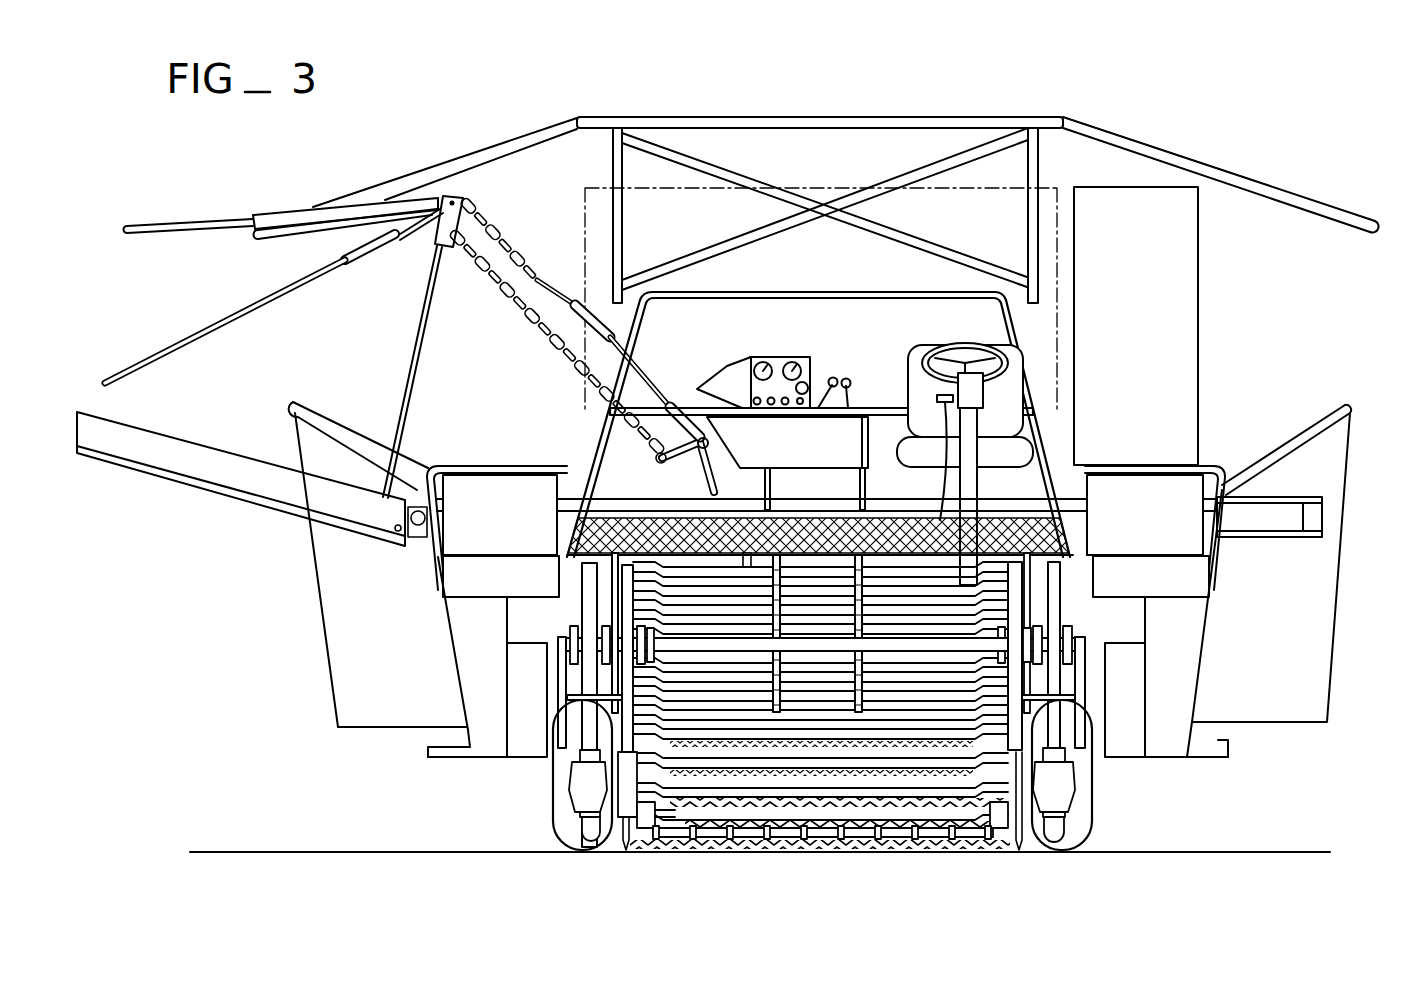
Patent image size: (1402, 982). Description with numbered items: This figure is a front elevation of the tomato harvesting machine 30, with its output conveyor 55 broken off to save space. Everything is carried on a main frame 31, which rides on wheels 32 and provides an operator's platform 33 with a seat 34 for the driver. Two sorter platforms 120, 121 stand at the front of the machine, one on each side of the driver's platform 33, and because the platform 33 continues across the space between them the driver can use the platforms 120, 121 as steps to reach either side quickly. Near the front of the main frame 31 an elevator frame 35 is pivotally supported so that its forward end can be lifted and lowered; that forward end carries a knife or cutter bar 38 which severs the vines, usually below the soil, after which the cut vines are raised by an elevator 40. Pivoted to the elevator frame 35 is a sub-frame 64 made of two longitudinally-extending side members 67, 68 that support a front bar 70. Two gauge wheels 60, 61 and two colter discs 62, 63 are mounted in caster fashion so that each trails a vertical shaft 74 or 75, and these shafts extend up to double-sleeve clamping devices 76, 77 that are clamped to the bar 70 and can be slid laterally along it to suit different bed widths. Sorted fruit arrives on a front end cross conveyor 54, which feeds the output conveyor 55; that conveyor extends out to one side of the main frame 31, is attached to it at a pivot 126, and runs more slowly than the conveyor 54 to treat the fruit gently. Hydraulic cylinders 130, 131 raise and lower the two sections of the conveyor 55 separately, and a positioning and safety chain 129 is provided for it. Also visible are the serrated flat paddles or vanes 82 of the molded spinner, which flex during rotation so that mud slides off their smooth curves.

The machine 30 is at (1098, 98).
The hydraulic cylinder 131 is at (275, 215).
The positioning and safety chain 129 is at (530, 312).
The hydraulic cylinder 130 is at (637, 380).
The operator's platform 33 is at (817, 520).
The seat 34 is at (910, 430).
The front end cross conveyor 54 is at (1005, 500).
The output conveyor 55 is at (193, 484).
The pivot 126 is at (416, 526).
The sorter platform 121 is at (425, 740).
The sorter platform 120 is at (1238, 742).
The main frame 31 is at (520, 759).
The side member 68 is at (552, 760).
The wheels 32 is at (553, 805).
The gauge wheel 61 is at (590, 826).
The gauge wheel 60 is at (1050, 836).
The colter disc 63 is at (620, 847).
The colter disc 62 is at (1014, 842).
The paddles or vanes 82 is at (690, 840).
The knife or cutter bar 38 is at (780, 838).
The elevator 40 is at (820, 692).
The front bar 70 is at (803, 640).
The vertical shaft 75 is at (1012, 605).
The double-sleeve clamping device 77 is at (998, 630).
The vertical shaft 74 is at (1052, 587).
The sub-frame 64 is at (1060, 608).
The double-sleeve clamping device 76 is at (1074, 632).
The side member 67 is at (1060, 738).
The elevator frame 35 is at (1065, 770).